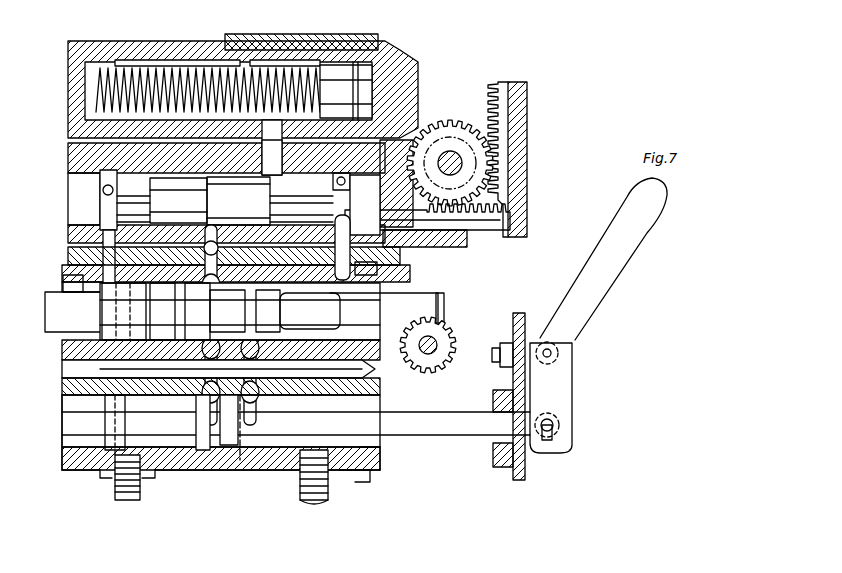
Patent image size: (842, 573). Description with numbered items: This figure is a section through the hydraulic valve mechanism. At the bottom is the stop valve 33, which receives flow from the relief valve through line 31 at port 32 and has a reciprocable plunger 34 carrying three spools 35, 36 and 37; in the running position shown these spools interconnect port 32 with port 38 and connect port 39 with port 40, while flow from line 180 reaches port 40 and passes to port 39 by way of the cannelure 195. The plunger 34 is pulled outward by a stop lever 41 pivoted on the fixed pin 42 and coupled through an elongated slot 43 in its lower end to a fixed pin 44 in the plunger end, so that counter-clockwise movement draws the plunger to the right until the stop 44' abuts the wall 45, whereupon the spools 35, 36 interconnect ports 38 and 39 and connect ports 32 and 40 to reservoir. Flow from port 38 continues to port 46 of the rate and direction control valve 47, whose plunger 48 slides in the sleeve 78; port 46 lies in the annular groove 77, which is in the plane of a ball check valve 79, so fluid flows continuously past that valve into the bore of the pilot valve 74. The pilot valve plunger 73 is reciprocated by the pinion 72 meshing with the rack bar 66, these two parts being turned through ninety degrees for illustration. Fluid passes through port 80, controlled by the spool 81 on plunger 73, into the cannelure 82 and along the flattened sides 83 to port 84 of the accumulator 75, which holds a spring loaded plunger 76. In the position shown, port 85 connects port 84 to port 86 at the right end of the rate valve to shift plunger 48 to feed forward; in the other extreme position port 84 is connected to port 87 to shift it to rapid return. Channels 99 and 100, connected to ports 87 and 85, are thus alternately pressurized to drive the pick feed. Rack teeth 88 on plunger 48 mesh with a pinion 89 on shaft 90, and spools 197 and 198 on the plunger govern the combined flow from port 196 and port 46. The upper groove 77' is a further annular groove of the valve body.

The line 31 is at (118, 492).
The port 32 is at (100, 476).
The stop valve 33 is at (170, 476).
The reciprocable plunger 34 is at (452, 437).
The spool 35 is at (108, 420).
The spool 36 is at (228, 450).
The spool 37 is at (382, 450).
The port 38 is at (203, 450).
The port 39 is at (244, 462).
The port 40 is at (372, 482).
The stop lever 41 is at (612, 272).
The fixed pin 42 is at (553, 354).
The elongated slot 43 is at (547, 441).
The fixed pin 44 is at (570, 415).
The stop 44' is at (531, 323).
The wall 45 is at (522, 318).
The port 46 is at (200, 330).
The rate and direction control valve 47 is at (100, 335).
The plunger 48 is at (400, 300).
The rack bar 66 is at (500, 88).
The pinion 72 is at (453, 132).
The plunger 73 is at (487, 230).
The pilot valve 74 is at (68, 240).
The accumulator 75 is at (200, 48).
The spring loaded plunger 76 is at (270, 44).
The annular groove 77 is at (156, 311).
The lower plate 77' is at (146, 425).
The sleeve 78 is at (372, 372).
The ball check valve 79 is at (206, 235).
The port 80 is at (262, 200).
The spool 81 is at (278, 202).
The cannelure 82 is at (152, 187).
The flattened sides 83 is at (272, 224).
The port 84 is at (282, 184).
The port 85 is at (345, 240).
The port 86 is at (375, 268).
The port 87 is at (68, 262).
The rack teeth 88 is at (437, 312).
The pinion 89 is at (444, 352).
The shaft 90 is at (436, 340).
The channel 99 is at (104, 192).
The channel 100 is at (416, 134).
The line 180 is at (330, 502).
The cannelure 195 is at (302, 470).
The port 196 is at (260, 330).
The spool 197 is at (241, 304).
The spool 198 is at (208, 308).